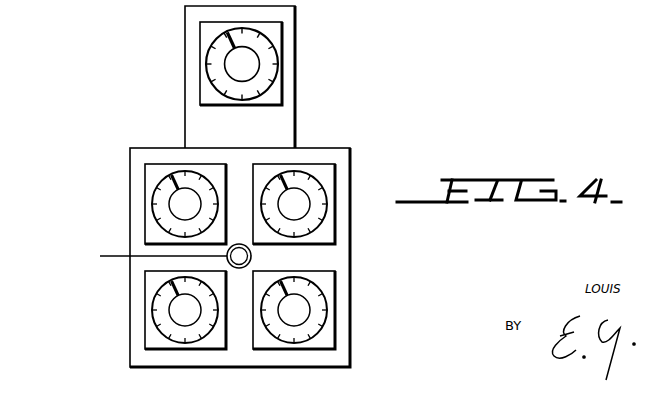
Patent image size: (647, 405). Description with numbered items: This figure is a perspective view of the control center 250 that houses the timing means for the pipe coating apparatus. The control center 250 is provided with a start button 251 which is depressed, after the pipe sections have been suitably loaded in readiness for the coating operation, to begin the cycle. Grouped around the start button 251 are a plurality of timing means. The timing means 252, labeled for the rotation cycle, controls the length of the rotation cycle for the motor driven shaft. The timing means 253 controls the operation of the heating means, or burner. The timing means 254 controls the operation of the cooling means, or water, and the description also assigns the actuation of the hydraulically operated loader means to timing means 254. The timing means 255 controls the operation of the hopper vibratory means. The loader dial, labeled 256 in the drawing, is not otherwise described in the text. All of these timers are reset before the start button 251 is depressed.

The control center 250 is at (112, 97).
The start button 251 is at (252, 257).
The timing means 252 is at (275, 90).
The timing means 253 is at (313, 214).
The timing means 254 is at (320, 312).
The timing means 255 is at (157, 310).
The loader timer dial 256 is at (158, 203).